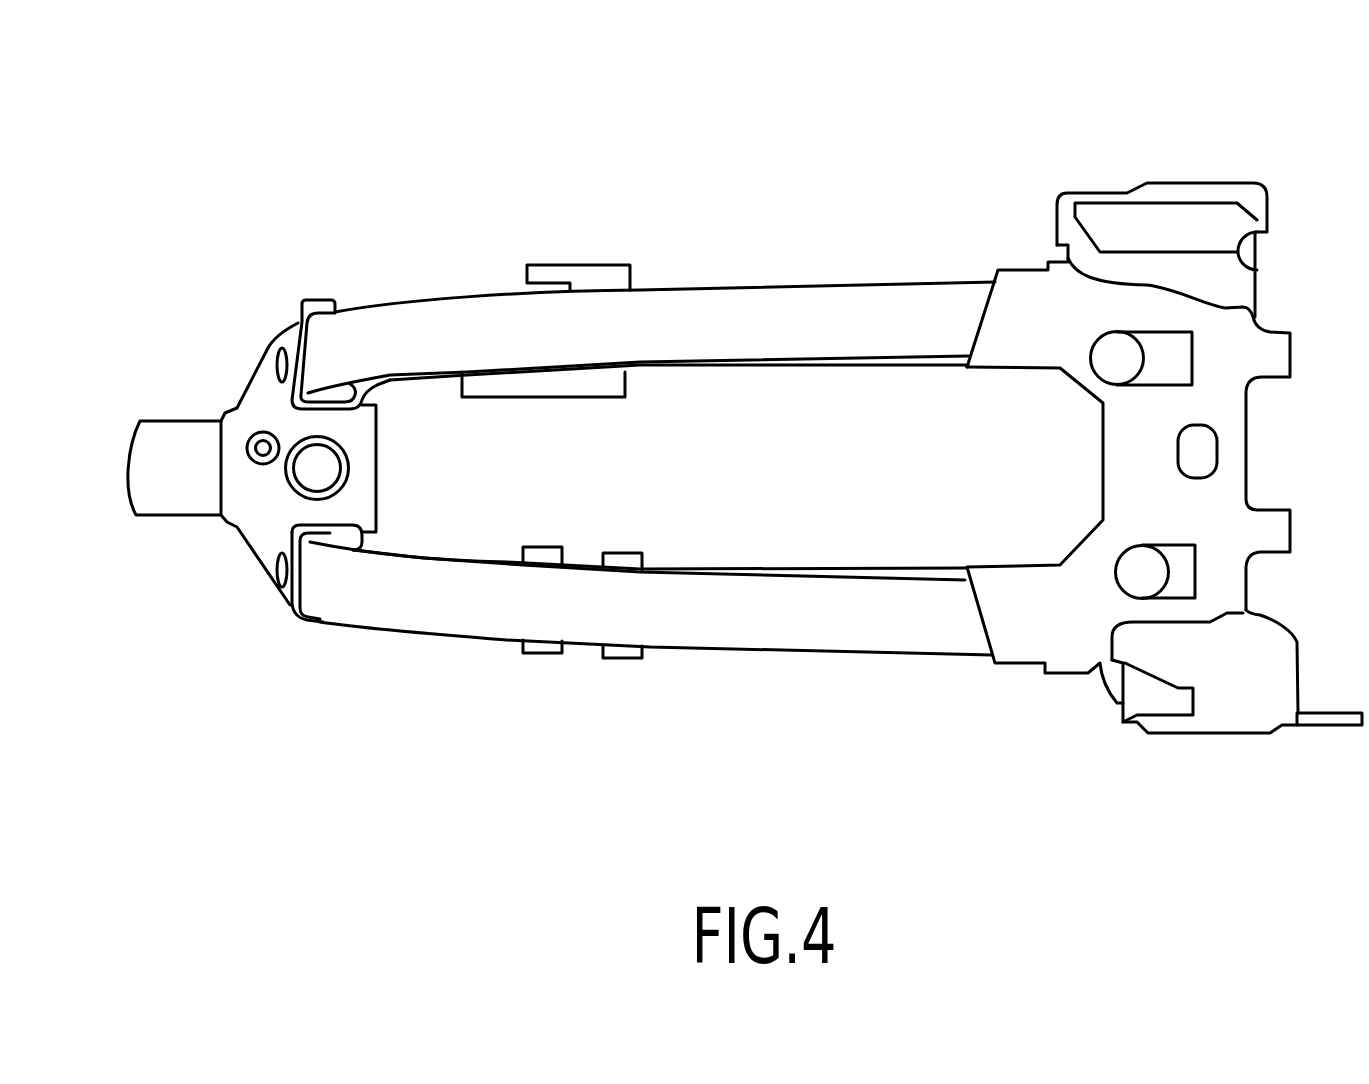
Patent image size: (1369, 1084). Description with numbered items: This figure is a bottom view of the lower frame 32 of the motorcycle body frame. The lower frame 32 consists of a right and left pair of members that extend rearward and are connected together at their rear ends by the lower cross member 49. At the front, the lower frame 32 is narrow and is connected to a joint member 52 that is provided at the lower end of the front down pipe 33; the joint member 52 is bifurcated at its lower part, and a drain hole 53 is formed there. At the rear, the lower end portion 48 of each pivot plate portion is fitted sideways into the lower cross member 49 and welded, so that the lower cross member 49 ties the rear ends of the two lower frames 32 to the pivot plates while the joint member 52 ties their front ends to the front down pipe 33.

The lower frame 32 is at (720, 300).
The front down pipe 33 is at (178, 430).
The lower end portion 48 is at (1195, 190).
The lower cross member 49 is at (1237, 450).
The joint member 52 is at (243, 520).
The drain hole 53 is at (337, 467).